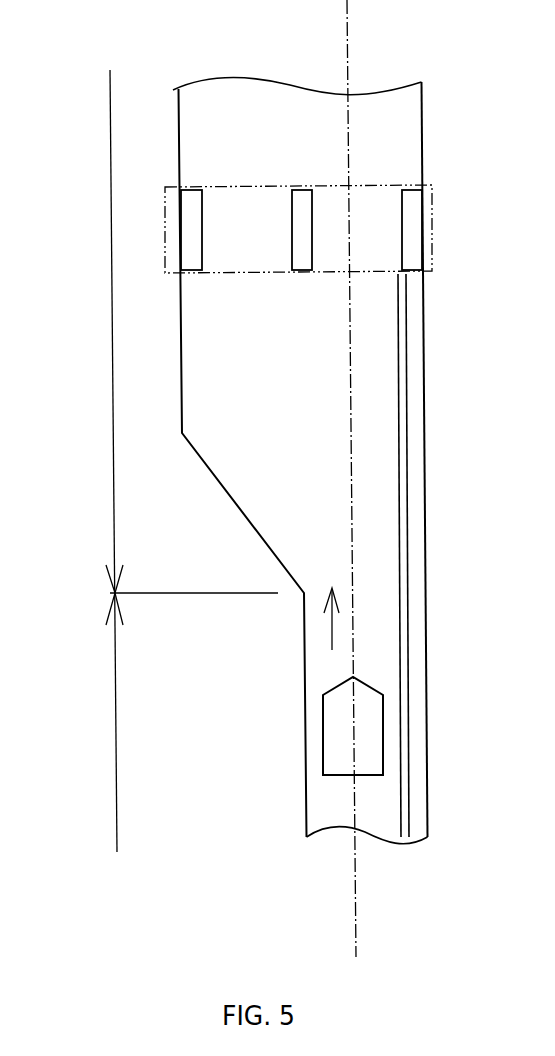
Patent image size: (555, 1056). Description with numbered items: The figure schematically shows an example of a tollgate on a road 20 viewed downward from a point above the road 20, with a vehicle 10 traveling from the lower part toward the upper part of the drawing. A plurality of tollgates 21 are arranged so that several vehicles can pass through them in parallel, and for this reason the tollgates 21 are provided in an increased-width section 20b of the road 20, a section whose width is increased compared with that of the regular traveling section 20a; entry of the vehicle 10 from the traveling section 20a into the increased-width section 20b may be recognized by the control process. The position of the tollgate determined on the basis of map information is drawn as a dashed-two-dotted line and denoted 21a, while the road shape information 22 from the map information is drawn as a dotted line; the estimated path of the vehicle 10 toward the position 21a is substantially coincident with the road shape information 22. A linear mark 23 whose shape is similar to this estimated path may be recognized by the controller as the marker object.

The vehicle 10 is at (384, 718).
The road 20 is at (424, 448).
The traveling section 20a is at (115, 740).
The increased-width section 20b is at (110, 297).
The tollgate 21 is at (252, 198).
The position of the tollgate determined on the basis of the map information 21a is at (432, 232).
The road shape information 22 is at (348, 45).
The linear mark 23 is at (406, 382).